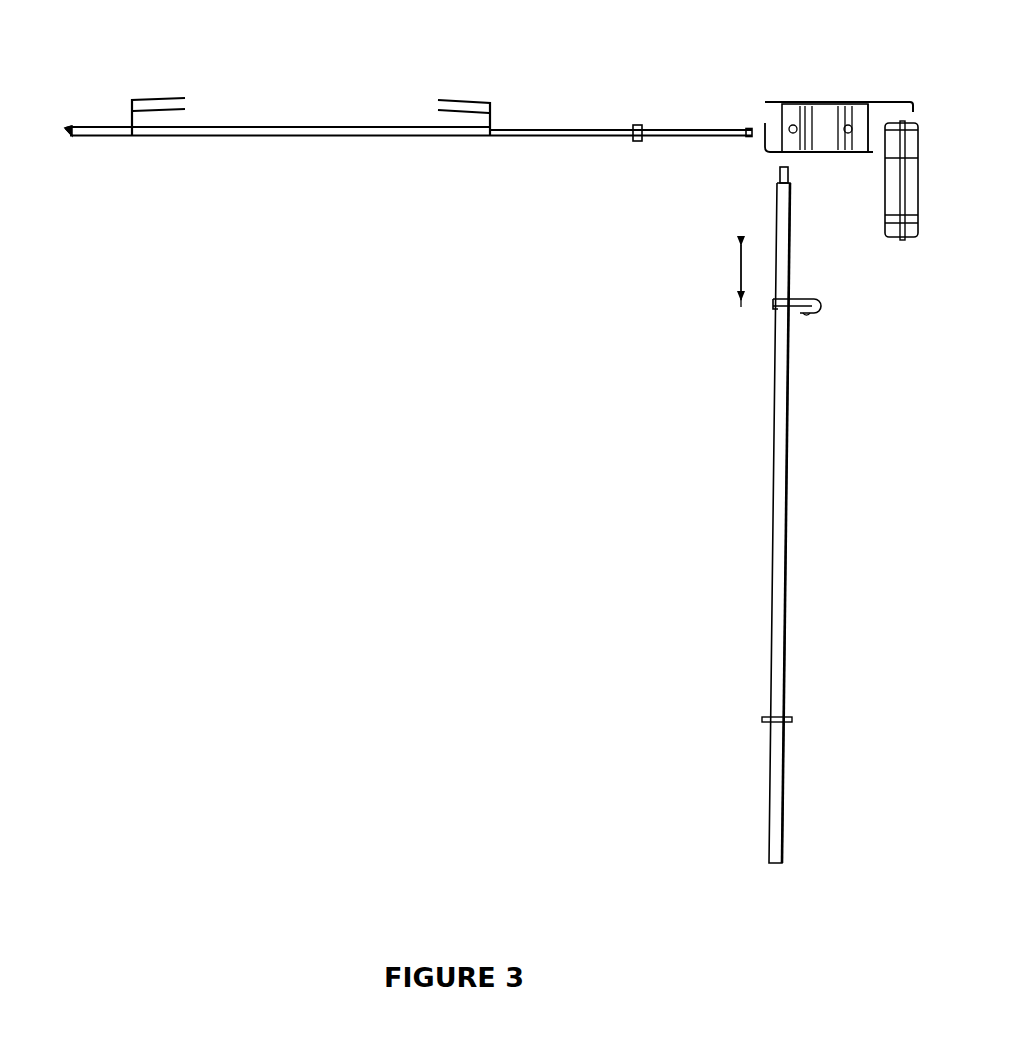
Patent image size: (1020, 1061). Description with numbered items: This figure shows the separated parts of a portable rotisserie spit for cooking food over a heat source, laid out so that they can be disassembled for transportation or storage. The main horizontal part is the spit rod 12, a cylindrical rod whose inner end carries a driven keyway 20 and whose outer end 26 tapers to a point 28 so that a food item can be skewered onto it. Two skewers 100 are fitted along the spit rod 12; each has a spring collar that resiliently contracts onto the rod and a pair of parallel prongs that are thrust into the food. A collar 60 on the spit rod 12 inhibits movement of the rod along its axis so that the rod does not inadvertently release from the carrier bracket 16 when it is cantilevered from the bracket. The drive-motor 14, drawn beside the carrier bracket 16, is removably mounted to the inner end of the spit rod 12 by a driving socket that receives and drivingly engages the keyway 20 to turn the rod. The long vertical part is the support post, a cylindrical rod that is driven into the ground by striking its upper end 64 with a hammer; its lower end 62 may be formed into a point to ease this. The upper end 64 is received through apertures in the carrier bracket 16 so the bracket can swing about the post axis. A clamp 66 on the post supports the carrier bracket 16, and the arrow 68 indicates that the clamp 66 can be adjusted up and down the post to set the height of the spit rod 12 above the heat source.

The spit rod 12 is at (340, 127).
The outer end 26 is at (84, 124).
The point 28 is at (66, 135).
The skewer 100 is at (168, 100).
The collar 60 is at (638, 125).
The driven keyway 20 is at (746, 128).
The carrier bracket 16 is at (829, 110).
The drive-motor 14 is at (893, 173).
The upper end 64 is at (777, 172).
The lower end 62 is at (773, 870).
The clamp 66 is at (822, 304).
The arrow 68 is at (738, 270).